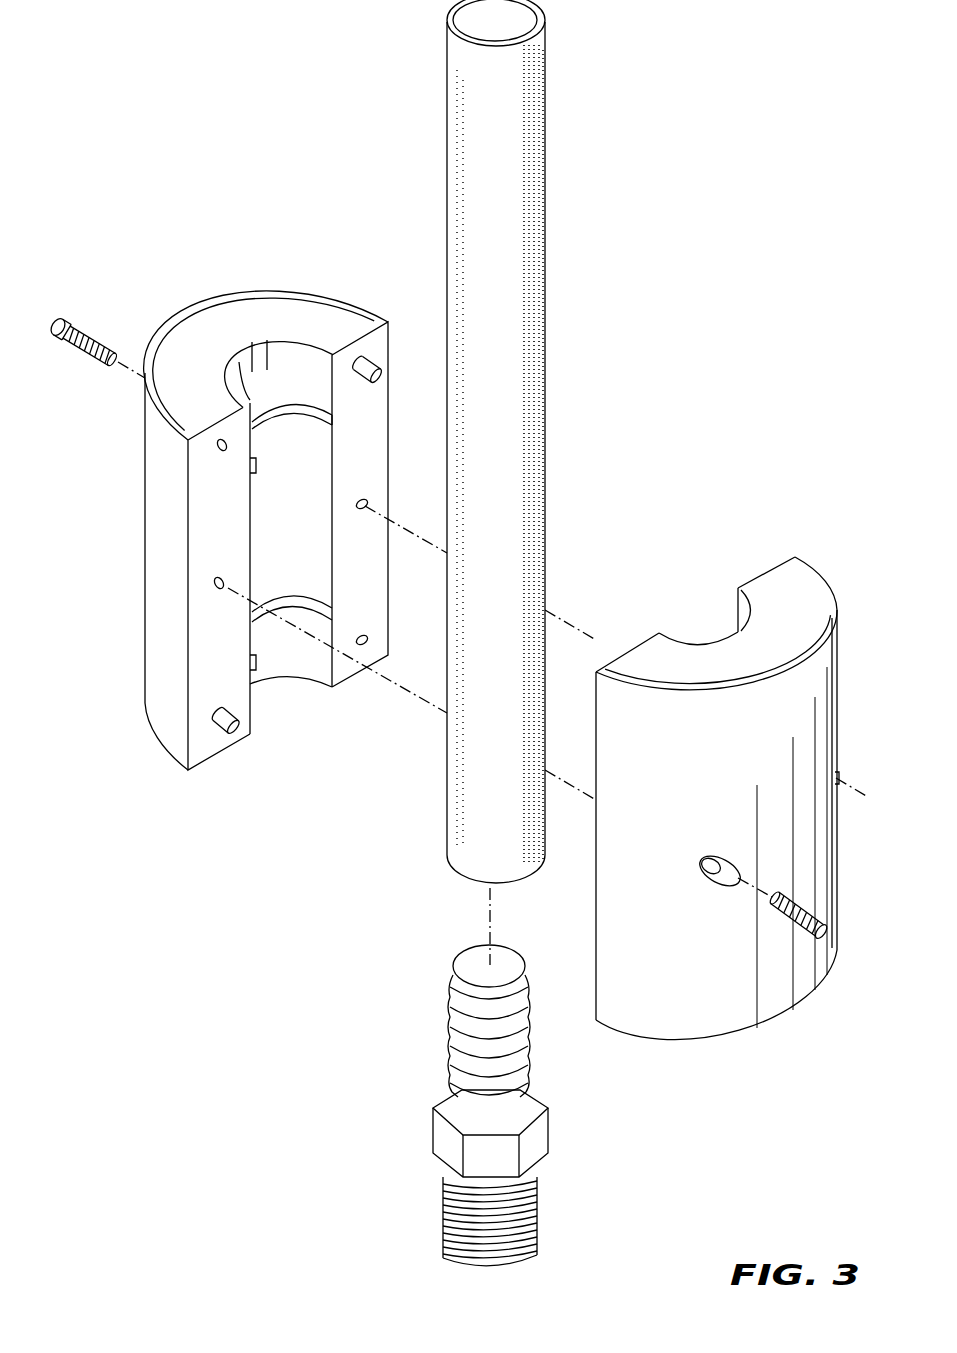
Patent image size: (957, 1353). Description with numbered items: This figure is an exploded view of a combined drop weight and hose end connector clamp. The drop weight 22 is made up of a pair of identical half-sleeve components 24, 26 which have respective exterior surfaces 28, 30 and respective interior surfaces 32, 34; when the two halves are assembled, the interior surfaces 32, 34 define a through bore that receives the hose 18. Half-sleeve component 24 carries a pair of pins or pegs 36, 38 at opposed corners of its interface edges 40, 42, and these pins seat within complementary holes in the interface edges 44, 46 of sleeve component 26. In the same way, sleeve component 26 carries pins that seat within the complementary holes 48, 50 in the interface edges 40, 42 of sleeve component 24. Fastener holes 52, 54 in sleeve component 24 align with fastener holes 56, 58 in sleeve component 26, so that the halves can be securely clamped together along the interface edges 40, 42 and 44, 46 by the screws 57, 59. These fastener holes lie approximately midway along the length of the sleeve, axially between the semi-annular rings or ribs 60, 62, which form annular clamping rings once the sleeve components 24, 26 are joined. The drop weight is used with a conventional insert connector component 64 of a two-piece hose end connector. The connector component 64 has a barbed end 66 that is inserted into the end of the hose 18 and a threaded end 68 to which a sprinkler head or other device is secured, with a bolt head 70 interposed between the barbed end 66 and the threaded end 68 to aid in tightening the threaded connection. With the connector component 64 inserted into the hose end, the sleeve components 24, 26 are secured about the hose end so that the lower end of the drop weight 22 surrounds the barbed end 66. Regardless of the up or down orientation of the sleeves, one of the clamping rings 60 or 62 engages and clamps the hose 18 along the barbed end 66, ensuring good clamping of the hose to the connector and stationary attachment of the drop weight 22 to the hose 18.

The hose 18 is at (545, 445).
The drop weight 22 is at (715, 497).
The half-sleeve component 24 is at (258, 544).
The half-sleeve component 26 is at (748, 777).
The exterior surface 28 is at (155, 557).
The exterior surface 30 is at (813, 878).
The interior surface 32 is at (300, 488).
The interior surface 34 is at (742, 617).
The pin 36 is at (378, 368).
The pin 38 is at (222, 738).
The interface edge 40 is at (200, 500).
The interface edge 42 is at (377, 588).
The interface edge 44 is at (612, 650).
The interface edge 46 is at (762, 572).
The hole 48 is at (220, 440).
The hole 50 is at (368, 641).
The fastener hole 52 is at (220, 589).
The fastener hole 54 is at (368, 507).
The fastener hole 56 is at (703, 873).
The screw 57 is at (100, 345).
The fastener hole 58 is at (836, 778).
The screw 59 is at (783, 922).
The semi-annular rib 60 is at (280, 418).
The semi-annular rib 62 is at (293, 615).
The insert connector component 64 is at (474, 1105).
The barbed end 66 is at (510, 1035).
The threaded end 68 is at (513, 1220).
The bolt head 70 is at (543, 1152).